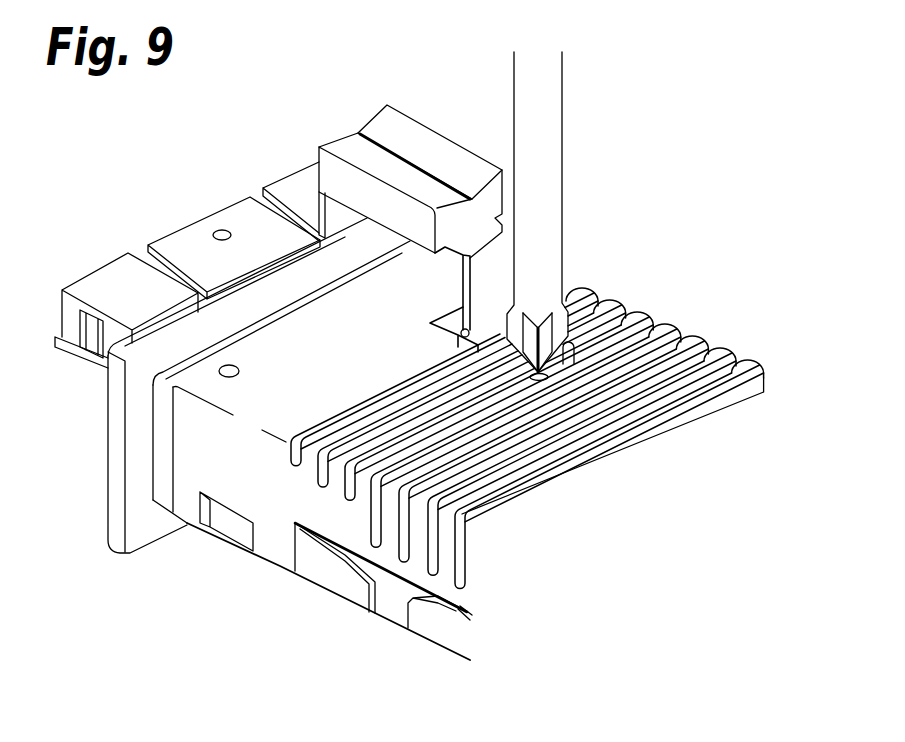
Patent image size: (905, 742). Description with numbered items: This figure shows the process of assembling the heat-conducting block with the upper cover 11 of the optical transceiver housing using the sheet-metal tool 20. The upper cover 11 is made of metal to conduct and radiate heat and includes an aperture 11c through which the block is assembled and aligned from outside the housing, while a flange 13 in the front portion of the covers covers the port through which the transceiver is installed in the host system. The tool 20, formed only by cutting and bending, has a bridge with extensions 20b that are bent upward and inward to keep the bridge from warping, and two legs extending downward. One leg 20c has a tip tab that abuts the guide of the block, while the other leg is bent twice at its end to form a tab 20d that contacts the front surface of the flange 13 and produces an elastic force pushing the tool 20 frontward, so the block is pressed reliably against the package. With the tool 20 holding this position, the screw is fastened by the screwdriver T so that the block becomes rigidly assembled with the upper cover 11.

The upper cover 11 is at (238, 460).
The aperture 11c is at (591, 332).
The flange 13 is at (106, 400).
The tool 20 is at (401, 170).
The extensions 20b is at (344, 147).
The leg 20c is at (462, 278).
The tab 20d is at (335, 212).
The screwdriver T is at (563, 187).